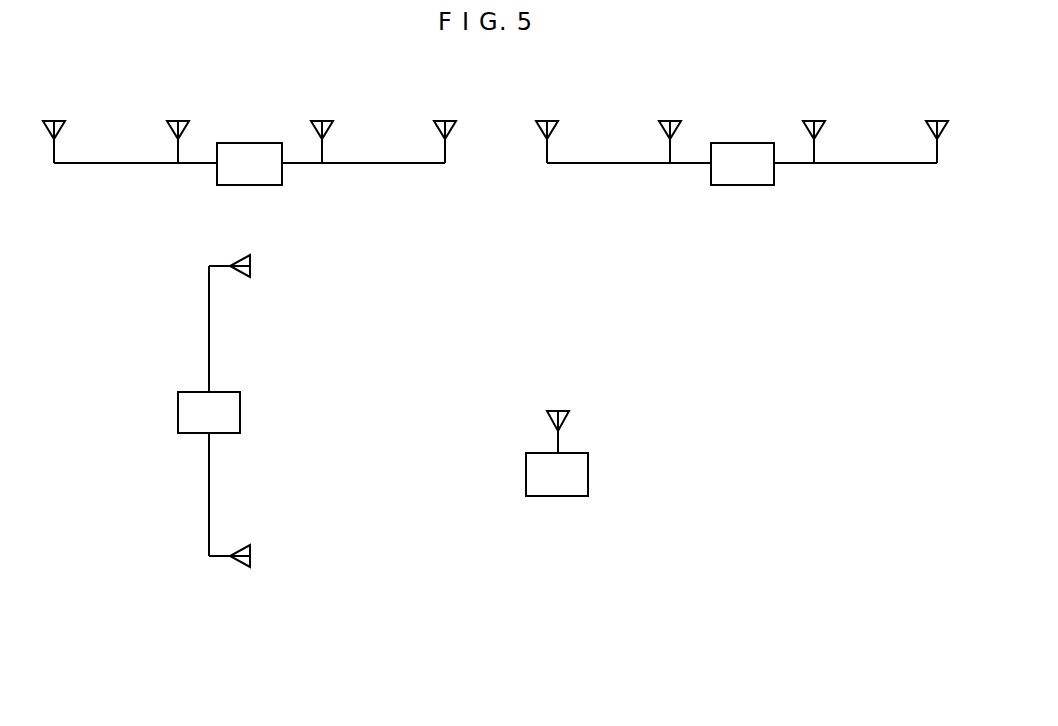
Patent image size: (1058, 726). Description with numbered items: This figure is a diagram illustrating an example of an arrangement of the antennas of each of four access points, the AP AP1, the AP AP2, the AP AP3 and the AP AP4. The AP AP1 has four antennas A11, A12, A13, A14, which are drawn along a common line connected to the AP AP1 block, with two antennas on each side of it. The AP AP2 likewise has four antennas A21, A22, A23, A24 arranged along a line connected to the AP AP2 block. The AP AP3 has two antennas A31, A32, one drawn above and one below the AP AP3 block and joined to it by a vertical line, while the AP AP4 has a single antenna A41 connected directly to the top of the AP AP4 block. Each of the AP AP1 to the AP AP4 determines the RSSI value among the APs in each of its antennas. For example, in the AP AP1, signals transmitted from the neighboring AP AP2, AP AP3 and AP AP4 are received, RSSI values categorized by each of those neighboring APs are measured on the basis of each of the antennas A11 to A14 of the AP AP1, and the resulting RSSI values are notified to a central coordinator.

The antenna A11 is at (58, 126).
The antenna A12 is at (182, 126).
The antenna A13 is at (326, 126).
The antenna A14 is at (449, 126).
The antenna A21 is at (551, 126).
The antenna A22 is at (674, 126).
The antenna A23 is at (818, 126).
The antenna A24 is at (941, 126).
The antenna A31 is at (248, 268).
The antenna A32 is at (248, 557).
The antenna A41 is at (562, 415).
The AP AP1 is at (249, 164).
The AP AP2 is at (742, 164).
The AP AP3 is at (209, 411).
The AP AP4 is at (557, 474).